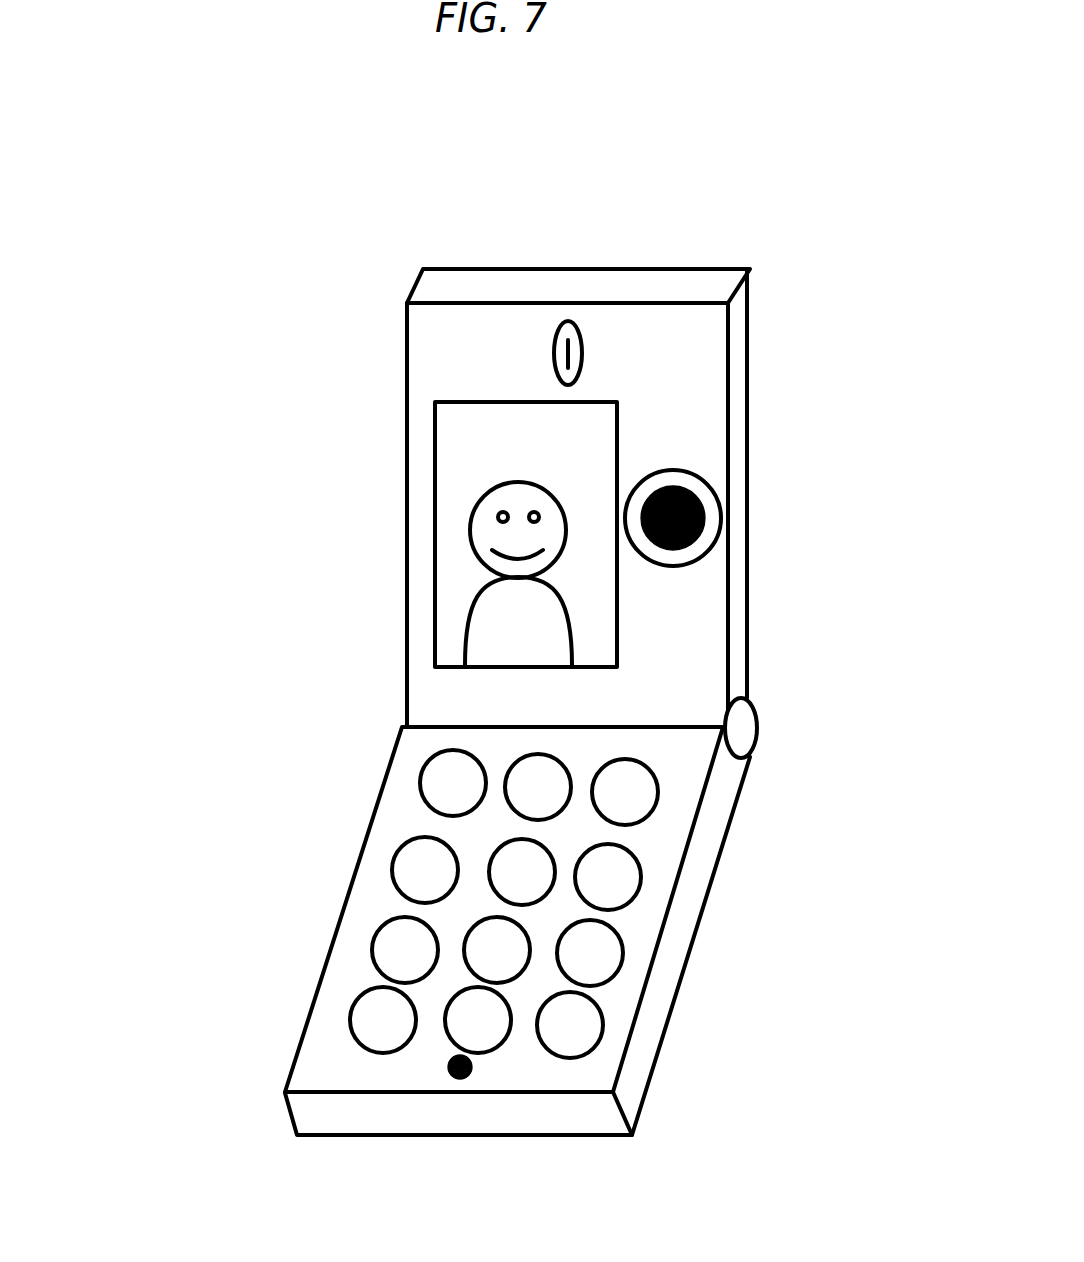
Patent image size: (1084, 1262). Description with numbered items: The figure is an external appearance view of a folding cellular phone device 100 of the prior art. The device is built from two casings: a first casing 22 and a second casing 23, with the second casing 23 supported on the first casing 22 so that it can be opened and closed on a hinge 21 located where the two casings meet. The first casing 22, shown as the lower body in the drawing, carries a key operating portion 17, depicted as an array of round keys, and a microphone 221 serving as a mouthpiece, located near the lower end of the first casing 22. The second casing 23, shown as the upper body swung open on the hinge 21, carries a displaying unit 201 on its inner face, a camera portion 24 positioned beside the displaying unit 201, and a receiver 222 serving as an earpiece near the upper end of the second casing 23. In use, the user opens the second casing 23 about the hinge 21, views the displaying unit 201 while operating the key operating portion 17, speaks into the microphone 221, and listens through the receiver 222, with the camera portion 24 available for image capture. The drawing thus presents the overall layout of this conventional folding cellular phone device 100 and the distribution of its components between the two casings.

The folding cellular phone device 100 is at (322, 695).
The second casing 23 is at (740, 350).
The first casing 22 is at (672, 970).
The hinge 21 is at (740, 728).
The receiver 222 is at (585, 337).
The displaying unit 201 is at (458, 507).
The camera portion 24 is at (708, 523).
The key operating portion 17 is at (628, 788).
The microphone 221 is at (455, 1066).